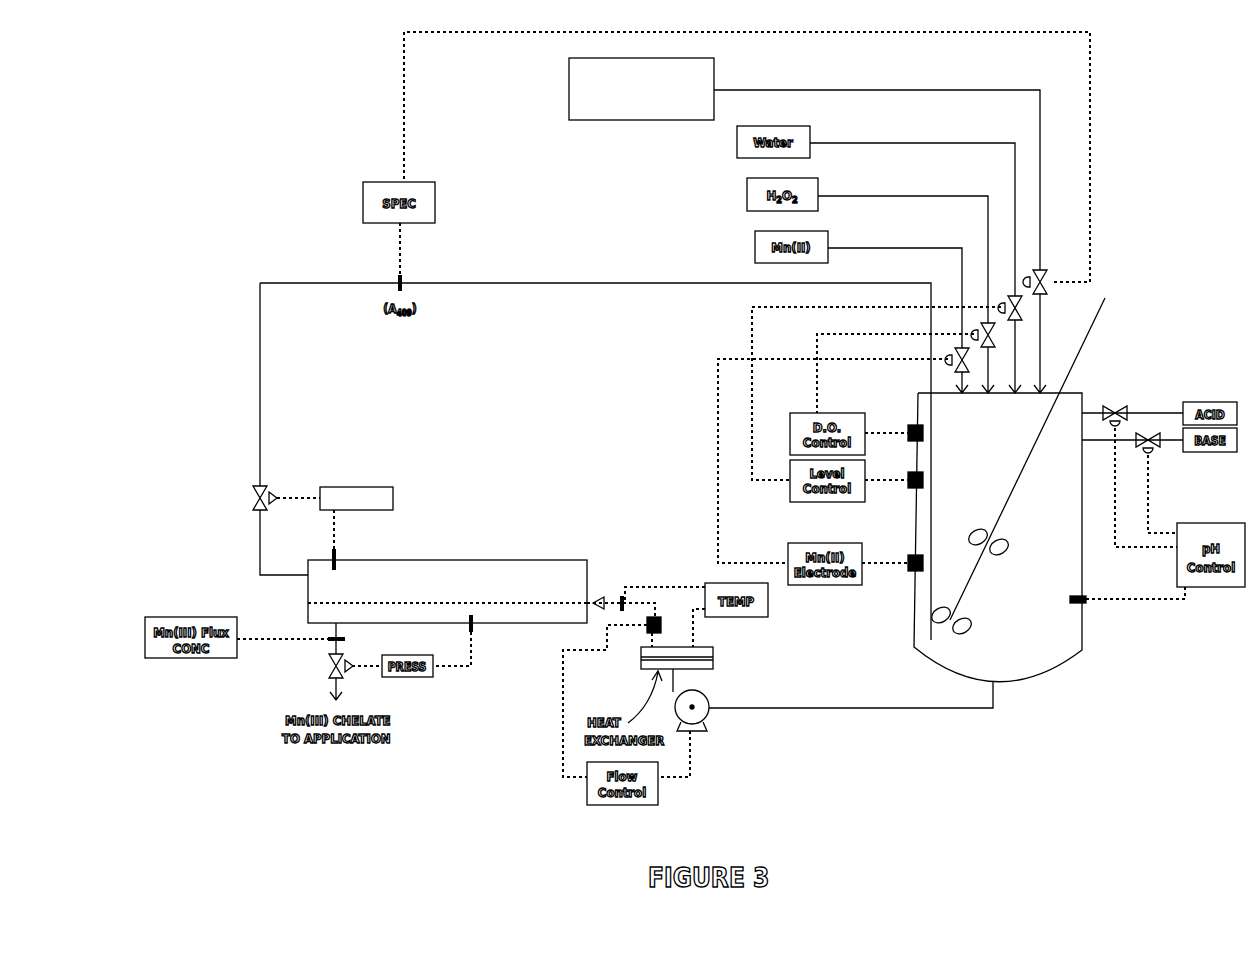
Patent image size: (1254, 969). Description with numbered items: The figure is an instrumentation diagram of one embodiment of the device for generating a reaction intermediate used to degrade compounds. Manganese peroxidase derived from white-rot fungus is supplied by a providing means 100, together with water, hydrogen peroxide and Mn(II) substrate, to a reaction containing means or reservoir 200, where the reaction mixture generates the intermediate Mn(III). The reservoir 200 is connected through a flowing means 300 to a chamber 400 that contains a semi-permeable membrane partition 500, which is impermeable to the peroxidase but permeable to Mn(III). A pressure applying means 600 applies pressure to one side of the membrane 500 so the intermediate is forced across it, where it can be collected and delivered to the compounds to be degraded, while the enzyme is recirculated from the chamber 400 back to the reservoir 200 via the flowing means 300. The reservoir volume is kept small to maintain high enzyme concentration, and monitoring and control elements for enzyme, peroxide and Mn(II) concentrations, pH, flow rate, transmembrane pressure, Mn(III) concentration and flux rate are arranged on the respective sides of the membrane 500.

The providing means 100 is at (688, 66).
The reaction containing means or reservoir 200 is at (1068, 408).
The flowing means 300 is at (766, 721).
The chamber 400 is at (492, 585).
The semi-permeable membrane partition 500 is at (363, 600).
The pressure applying means 600 is at (385, 493).